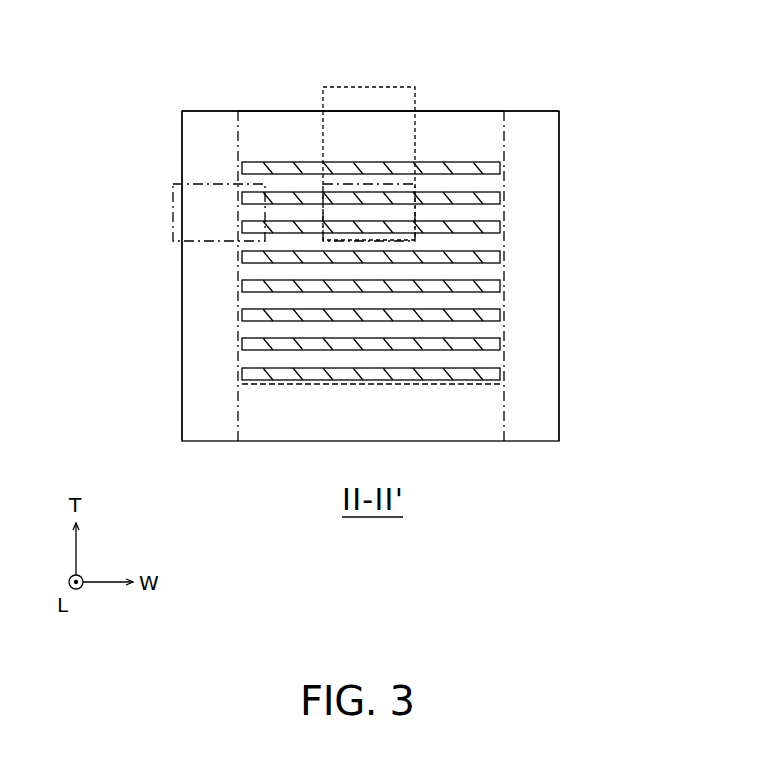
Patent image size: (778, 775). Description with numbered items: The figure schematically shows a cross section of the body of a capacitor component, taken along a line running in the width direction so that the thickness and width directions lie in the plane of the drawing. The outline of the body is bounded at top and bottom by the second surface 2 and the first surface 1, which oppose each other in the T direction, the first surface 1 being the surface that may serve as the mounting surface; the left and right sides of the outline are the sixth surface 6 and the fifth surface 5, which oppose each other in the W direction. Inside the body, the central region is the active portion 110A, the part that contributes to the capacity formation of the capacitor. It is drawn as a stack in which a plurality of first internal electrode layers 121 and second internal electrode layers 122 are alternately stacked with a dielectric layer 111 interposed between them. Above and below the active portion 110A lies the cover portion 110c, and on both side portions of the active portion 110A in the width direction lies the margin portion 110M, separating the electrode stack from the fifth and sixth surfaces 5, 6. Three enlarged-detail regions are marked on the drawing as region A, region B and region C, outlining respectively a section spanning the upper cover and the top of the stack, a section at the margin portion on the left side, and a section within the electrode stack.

The first surface 1 is at (462, 443).
The second surface 2 is at (273, 110).
The fifth surface 5 is at (559, 348).
The sixth surface 6 is at (183, 349).
The margin portion 110M is at (543, 148).
The cover portion 110c is at (433, 127).
The active portion 110A is at (431, 216).
The dielectric layer 111 is at (495, 302).
The first internal electrode layer 121 is at (500, 287).
The second internal electrode layer 122 is at (495, 316).
The region A is at (378, 87).
The region B is at (173, 215).
The region C is at (415, 213).